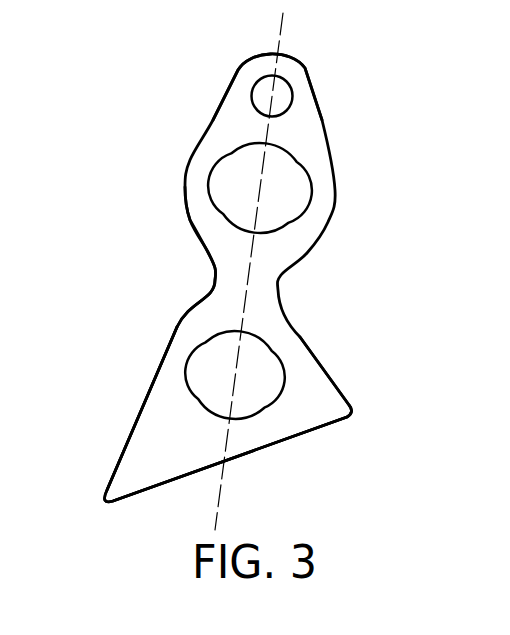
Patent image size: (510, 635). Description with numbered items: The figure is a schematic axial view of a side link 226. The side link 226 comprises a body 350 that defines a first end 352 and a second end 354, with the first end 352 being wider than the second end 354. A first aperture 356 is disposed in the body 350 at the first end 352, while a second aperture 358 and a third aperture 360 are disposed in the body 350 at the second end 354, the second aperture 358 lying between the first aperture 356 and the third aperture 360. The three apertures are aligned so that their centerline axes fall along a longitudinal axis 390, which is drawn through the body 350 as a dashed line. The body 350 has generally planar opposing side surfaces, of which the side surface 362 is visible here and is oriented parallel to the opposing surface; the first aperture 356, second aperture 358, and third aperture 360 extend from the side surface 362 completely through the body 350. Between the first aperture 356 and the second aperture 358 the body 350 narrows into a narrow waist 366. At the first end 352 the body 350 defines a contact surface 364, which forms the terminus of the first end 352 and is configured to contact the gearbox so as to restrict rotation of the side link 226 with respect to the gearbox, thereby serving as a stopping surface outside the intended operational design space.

The side link 226 is at (124, 115).
The body 350 is at (154, 375).
The first end 352 is at (276, 471).
The second end 354 is at (218, 60).
The first aperture 356 is at (263, 337).
The second aperture 358 is at (289, 149).
The third aperture 360 is at (288, 76).
The side surface 362 is at (150, 427).
The contact surface 364 is at (290, 440).
The narrow waist 366 is at (213, 283).
The longitudinal axis 390 is at (213, 490).